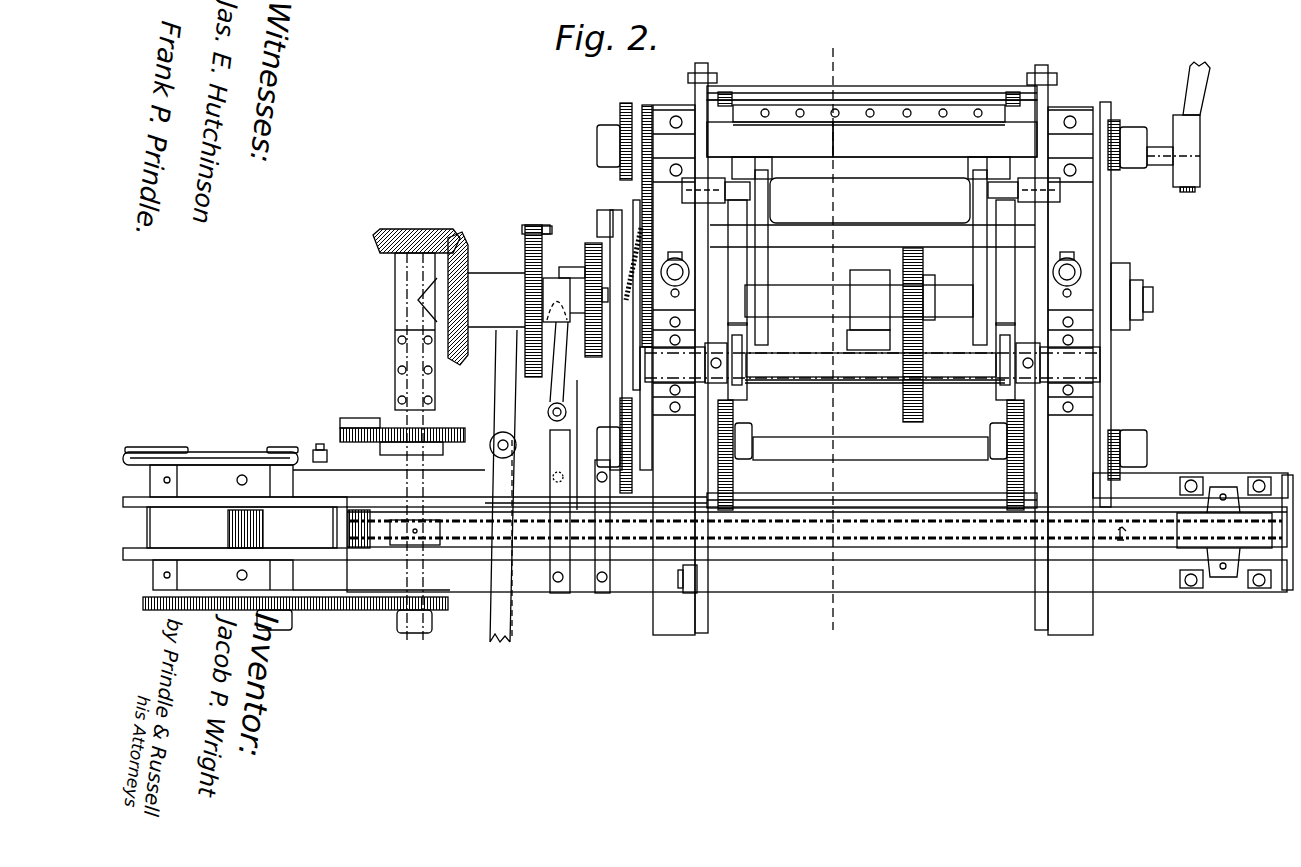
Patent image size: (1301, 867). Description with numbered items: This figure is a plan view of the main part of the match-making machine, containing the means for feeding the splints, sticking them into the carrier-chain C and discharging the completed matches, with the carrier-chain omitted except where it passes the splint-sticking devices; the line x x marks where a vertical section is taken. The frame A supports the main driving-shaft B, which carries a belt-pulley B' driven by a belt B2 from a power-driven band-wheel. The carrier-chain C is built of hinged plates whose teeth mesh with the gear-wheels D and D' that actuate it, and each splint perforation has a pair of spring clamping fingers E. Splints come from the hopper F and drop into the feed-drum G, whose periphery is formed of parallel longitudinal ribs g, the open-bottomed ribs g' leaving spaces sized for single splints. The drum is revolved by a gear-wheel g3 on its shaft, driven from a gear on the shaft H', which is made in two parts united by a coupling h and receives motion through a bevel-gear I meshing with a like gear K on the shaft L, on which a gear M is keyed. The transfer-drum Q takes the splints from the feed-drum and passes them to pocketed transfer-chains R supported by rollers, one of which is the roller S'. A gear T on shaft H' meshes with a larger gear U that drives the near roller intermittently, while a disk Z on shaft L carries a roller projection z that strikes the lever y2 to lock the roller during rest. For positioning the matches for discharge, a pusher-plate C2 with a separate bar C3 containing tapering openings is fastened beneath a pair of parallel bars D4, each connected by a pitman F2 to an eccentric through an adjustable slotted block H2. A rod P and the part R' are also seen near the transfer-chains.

The frame A is at (663, 105).
The main driving-shaft B is at (1160, 139).
The belt-pulley B' is at (1189, 153).
The belt B2 is at (1202, 80).
The carrier-chain C is at (889, 93).
The pusher-plate C2 is at (770, 139).
The bar C3 is at (884, 113).
The gear-wheels D is at (871, 455).
The gear-wheels D' is at (872, 149).
The parallel bars D4 is at (702, 218).
The spring splint-clamping fingers E is at (398, 624).
The hopper F is at (286, 538).
The pitman F2 is at (735, 272).
The feed-drum G is at (262, 529).
The longitudinal ribs g is at (242, 530).
The ribs g' is at (310, 526).
The gear-wheel g3 is at (300, 612).
The shaft H' is at (367, 409).
The slotted block H2 is at (745, 197).
The coupling h is at (395, 353).
The bevel-gear I is at (416, 226).
The bevel-gear K is at (467, 265).
The shaft L is at (567, 292).
The gear M is at (592, 358).
The rod P is at (496, 394).
The transfer-drum Q is at (441, 546).
The transfer-chains R is at (817, 565).
The stop R' is at (1124, 552).
The roller S' is at (1224, 509).
The gear T is at (458, 428).
The gear U is at (338, 430).
The disk Z is at (522, 248).
The projection z is at (551, 230).
The lever y2 is at (568, 400).
The section line x is at (828, 337).